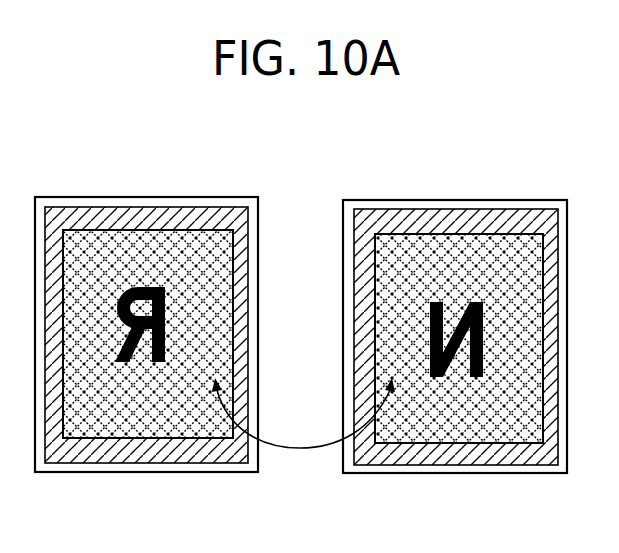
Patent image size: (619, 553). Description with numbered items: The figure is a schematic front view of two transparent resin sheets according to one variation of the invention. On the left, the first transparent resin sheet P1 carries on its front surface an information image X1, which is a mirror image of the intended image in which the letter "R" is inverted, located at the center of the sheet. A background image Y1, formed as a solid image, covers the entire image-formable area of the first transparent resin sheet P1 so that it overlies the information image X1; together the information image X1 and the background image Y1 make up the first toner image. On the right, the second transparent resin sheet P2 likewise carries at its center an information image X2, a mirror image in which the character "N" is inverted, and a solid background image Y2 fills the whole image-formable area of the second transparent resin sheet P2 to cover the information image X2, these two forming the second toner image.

The first transparent resin sheet P1 is at (146, 325).
The second transparent resin sheet P2 is at (455, 328).
The information image X1 is at (110, 418).
The background image Y1 is at (165, 453).
The information image X2 is at (435, 428).
The background image Y2 is at (487, 453).